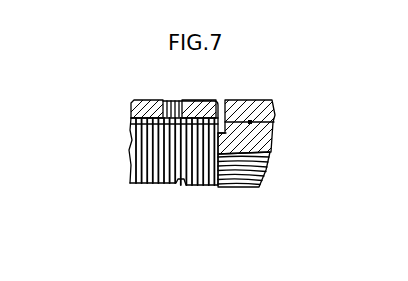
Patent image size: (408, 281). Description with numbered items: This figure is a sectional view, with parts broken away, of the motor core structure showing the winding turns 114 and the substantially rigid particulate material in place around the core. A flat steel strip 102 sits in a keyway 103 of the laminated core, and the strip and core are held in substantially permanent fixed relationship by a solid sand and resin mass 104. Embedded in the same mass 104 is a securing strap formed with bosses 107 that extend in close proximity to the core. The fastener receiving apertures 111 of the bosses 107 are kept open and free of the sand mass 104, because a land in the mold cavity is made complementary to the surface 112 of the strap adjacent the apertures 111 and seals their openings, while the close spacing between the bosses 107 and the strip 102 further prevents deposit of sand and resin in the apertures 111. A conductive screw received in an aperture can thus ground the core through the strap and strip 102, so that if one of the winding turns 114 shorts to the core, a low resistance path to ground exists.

The strip 102 is at (252, 122).
The keyway 103 is at (138, 132).
The sand and resin mass 104 is at (262, 102).
The bosses 107 is at (133, 112).
The fastener receiving apertures 111 is at (176, 100).
The surface of the strap 112 is at (205, 100).
The winding turns 114 is at (244, 177).